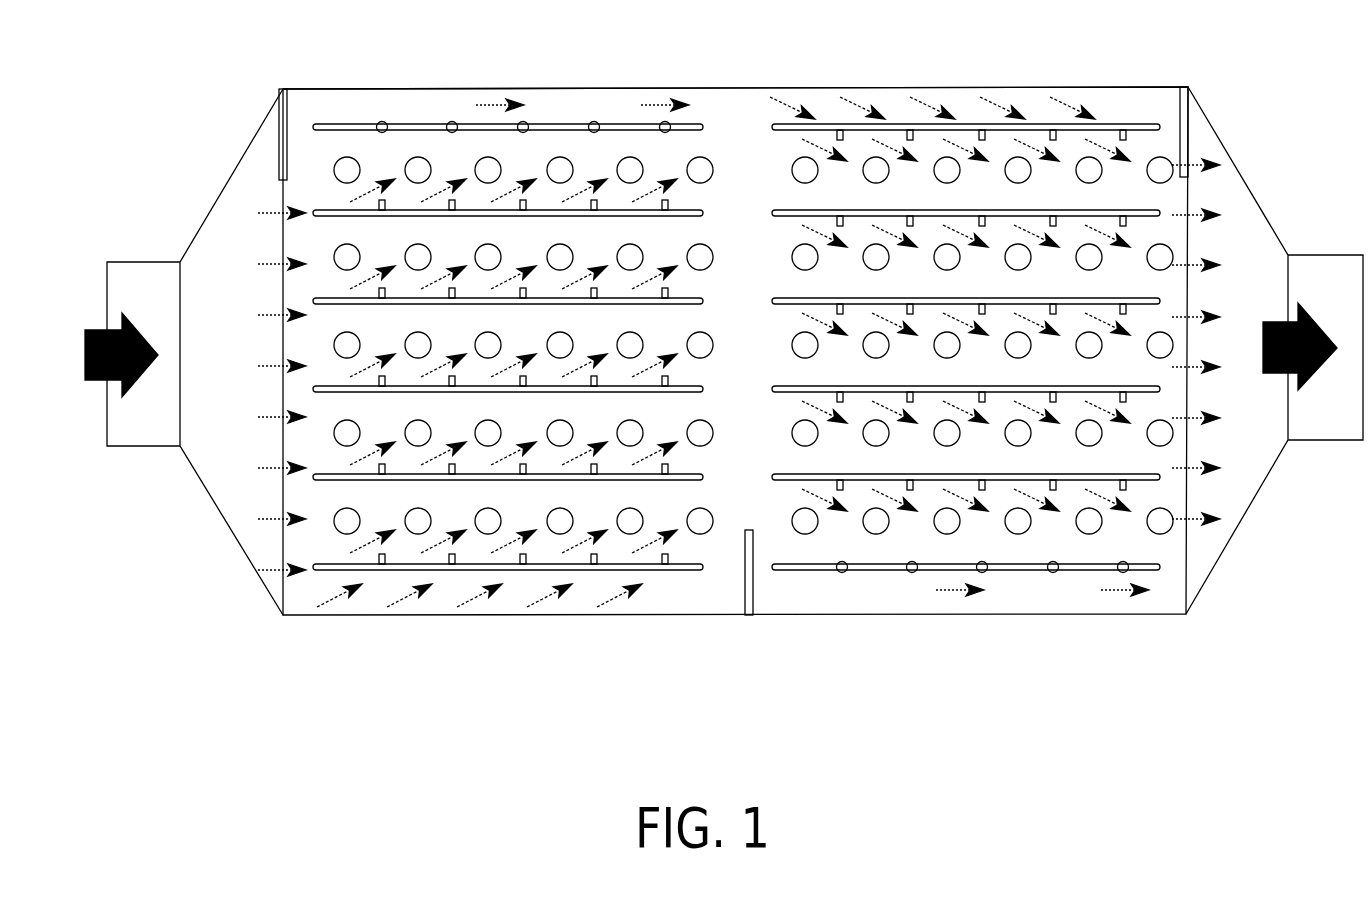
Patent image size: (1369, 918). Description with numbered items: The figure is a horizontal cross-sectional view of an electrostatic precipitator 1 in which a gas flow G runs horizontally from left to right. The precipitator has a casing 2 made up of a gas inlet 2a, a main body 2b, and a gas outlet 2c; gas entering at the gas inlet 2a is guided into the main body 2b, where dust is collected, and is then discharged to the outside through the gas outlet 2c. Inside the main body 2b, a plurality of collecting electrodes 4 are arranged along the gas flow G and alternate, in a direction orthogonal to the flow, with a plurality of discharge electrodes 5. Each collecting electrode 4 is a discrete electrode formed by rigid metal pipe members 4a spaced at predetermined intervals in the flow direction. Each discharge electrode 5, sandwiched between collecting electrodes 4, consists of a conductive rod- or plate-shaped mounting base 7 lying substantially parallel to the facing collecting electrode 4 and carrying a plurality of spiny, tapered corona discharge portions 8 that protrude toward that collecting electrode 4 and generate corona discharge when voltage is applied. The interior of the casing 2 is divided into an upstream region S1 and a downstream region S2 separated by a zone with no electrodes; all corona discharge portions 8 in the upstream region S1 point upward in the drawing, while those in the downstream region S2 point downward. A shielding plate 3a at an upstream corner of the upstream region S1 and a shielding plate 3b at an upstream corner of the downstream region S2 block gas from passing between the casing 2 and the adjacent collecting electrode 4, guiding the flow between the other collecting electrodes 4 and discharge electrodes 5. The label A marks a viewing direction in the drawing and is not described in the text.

The electrostatic precipitator 1 is at (102, 86).
The casing 2 is at (735, 307).
The gas inlet 2a is at (145, 260).
The main body 2b is at (690, 87).
The gas outlet 2c is at (1325, 253).
The shielding plate 3a is at (278, 141).
The shielding plate 3b is at (743, 590).
The collecting electrode 4 is at (733, 163).
The pipe member 4a is at (566, 110).
The discharge electrode 5 is at (729, 206).
The mounting base 7 is at (418, 123).
The corona discharge portion 8 is at (388, 215).
The flow direction A is at (520, 26).
The upstream region S1 is at (502, 666).
The downstream region S2 is at (967, 660).
The gas flow G is at (695, 350).